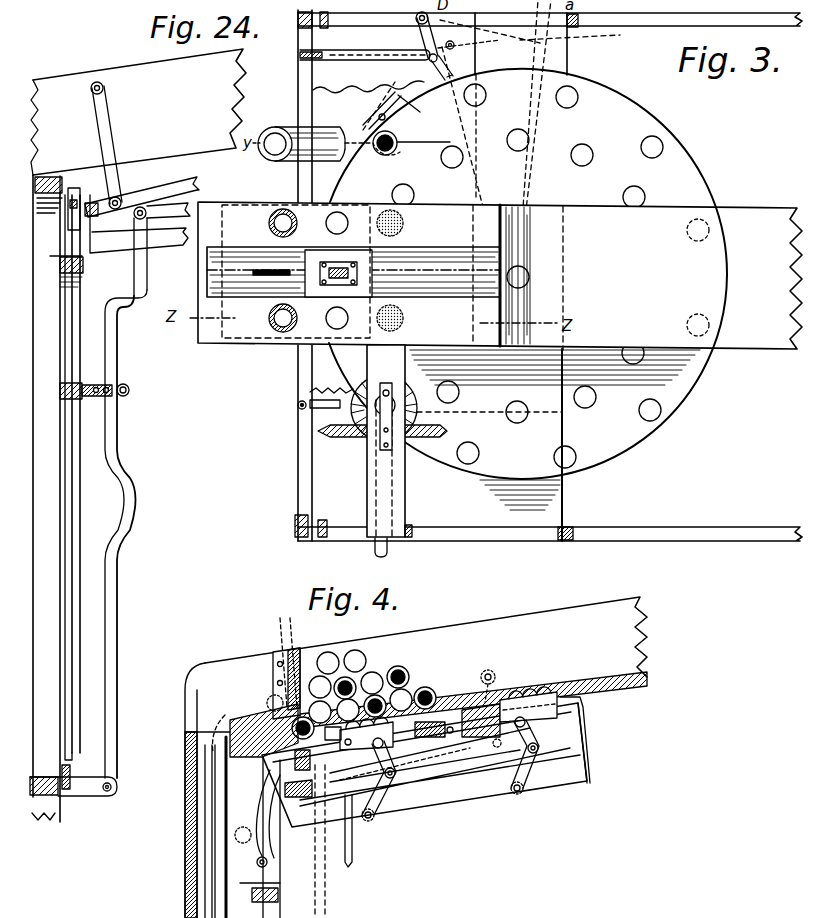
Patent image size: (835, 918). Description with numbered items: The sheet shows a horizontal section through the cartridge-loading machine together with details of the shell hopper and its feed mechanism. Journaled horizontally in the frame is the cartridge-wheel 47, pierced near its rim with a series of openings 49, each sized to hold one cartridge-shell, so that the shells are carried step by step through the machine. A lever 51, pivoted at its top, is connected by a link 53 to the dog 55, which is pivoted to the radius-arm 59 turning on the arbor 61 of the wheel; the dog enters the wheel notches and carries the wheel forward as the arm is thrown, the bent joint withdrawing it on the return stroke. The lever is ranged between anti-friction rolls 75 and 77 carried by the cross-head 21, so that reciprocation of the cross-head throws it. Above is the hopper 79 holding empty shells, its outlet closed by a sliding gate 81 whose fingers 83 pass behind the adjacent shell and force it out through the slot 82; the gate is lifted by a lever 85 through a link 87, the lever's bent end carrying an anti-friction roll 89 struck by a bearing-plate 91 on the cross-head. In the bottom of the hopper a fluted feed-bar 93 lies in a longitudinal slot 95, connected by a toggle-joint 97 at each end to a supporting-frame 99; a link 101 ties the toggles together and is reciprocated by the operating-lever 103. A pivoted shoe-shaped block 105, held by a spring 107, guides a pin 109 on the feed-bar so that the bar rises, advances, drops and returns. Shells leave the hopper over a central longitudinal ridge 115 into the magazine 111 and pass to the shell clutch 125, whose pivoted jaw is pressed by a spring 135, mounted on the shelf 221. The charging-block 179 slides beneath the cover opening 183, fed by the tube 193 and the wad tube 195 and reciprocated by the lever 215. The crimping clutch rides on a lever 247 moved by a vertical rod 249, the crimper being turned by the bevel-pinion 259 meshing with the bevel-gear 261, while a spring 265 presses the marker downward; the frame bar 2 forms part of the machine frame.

In FIG. 24, the frame bar 2 is at (40, 315).
In FIG. 3, the frame bar 2 is at (653, 19).
In FIG. 4, the frame bar 2 is at (253, 790).
In FIG. 24, the cross-head 21 is at (83, 266).
In FIG. 4, the cross-head 21 is at (278, 898).
In FIG. 3, the cartridge-wheel 47 is at (636, 120).
In FIG. 3, the openings 49 is at (661, 147).
In FIG. 3, the lever 51 is at (318, 57).
In FIG. 3, the link 53 is at (368, 58).
In FIG. 3, the dog 55 is at (419, 43).
In FIG. 3, the radius-arm 59 is at (455, 76).
In FIG. 3, the arbor 61 is at (528, 282).
In FIG. 24, the anti-friction roll 75 is at (105, 373).
In FIG. 24, the anti-friction roll 77 is at (130, 392).
In FIG. 24, the hopper 79 is at (138, 112).
In FIG. 4, the hopper 79 is at (522, 619).
In FIG. 4, the gate 81 is at (280, 651).
In FIG. 4, the slot 82 is at (268, 700).
In FIG. 4, the fingers 83 is at (309, 771).
In FIG. 24, the lever 85 is at (142, 196).
In FIG. 4, the lever 85 is at (304, 808).
In FIG. 24, the link 87 is at (110, 133).
In FIG. 4, the link 87 is at (326, 806).
In FIG. 4, the anti-friction roll 89 is at (268, 866).
In FIG. 24, the bearing-plate 91 is at (58, 262).
In FIG. 4, the bearing-plate 91 is at (243, 893).
In FIG. 4, the feed-bar 93 is at (512, 695).
In FIG. 4, the longitudinal slot 95 is at (556, 690).
In FIG. 4, the toggle-joint 97 is at (528, 735).
In FIG. 24, the supporting-frame 99 is at (152, 247).
In FIG. 4, the supporting-frame 99 is at (452, 809).
In FIG. 4, the link 101 is at (450, 760).
In FIG. 24, the operating-lever 103 is at (118, 443).
In FIG. 4, the operating-lever 103 is at (352, 845).
In FIG. 4, the shoe-shaped block 105 is at (435, 708).
In FIG. 4, the spring 107 is at (458, 754).
In FIG. 4, the pin 109 is at (496, 686).
In FIG. 3, the magazine 111 is at (268, 222).
In FIG. 4, the magazine 111 is at (197, 803).
In FIG. 4, the central longitudinal ridge 115 is at (218, 719).
In FIG. 3, the shell clutch 125 is at (421, 109).
In FIG. 3, the spring 135 is at (382, 108).
In FIG. 3, the charging-block 179 is at (341, 226).
In FIG. 3, the opening 183 is at (383, 157).
In FIG. 3, the tube 193 is at (404, 222).
In FIG. 3, the wad tube 195 is at (274, 127).
In FIG. 3, the arm or lever 215 is at (332, 286).
In FIG. 3, the shelf 221 is at (342, 110).
In FIG. 3, the lever 247 is at (335, 405).
In FIG. 3, the vertical rod 249 is at (300, 408).
In FIG. 3, the bevel-pinion 259 is at (412, 392).
In FIG. 3, the bevel-gear 261 is at (345, 438).
In FIG. 3, the spring 265 is at (388, 451).